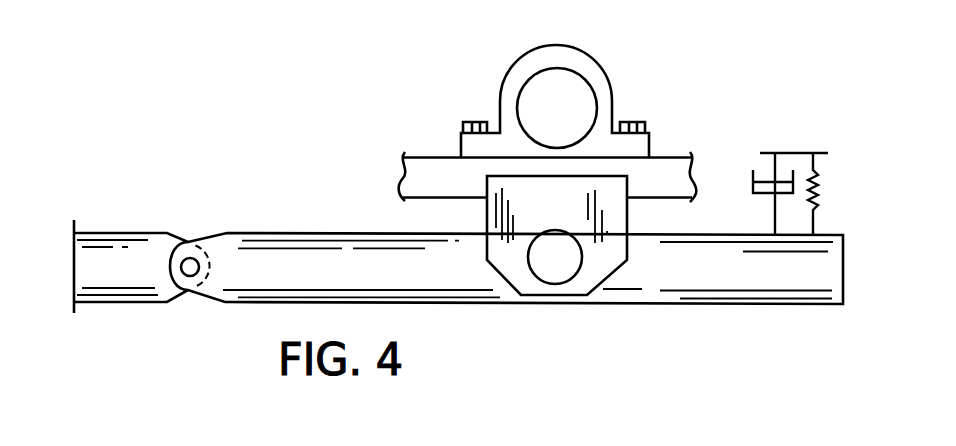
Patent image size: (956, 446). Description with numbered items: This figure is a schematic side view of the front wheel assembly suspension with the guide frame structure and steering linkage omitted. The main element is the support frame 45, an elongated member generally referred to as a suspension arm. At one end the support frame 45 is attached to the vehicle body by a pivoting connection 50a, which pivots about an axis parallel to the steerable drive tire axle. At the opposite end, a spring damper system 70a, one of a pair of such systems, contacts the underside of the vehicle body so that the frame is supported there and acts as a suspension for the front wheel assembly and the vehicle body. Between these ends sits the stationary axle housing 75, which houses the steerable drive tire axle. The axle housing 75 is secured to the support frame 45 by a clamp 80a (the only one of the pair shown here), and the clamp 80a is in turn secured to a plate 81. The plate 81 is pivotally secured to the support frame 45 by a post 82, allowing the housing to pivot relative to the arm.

The support frame 45 is at (753, 280).
The pivoting connection 50a is at (188, 242).
The spring damper system 70a is at (817, 188).
The stationary axle housing 75 is at (513, 80).
The clamp 80a is at (610, 75).
The plate 81 is at (600, 270).
The post 82 is at (548, 268).